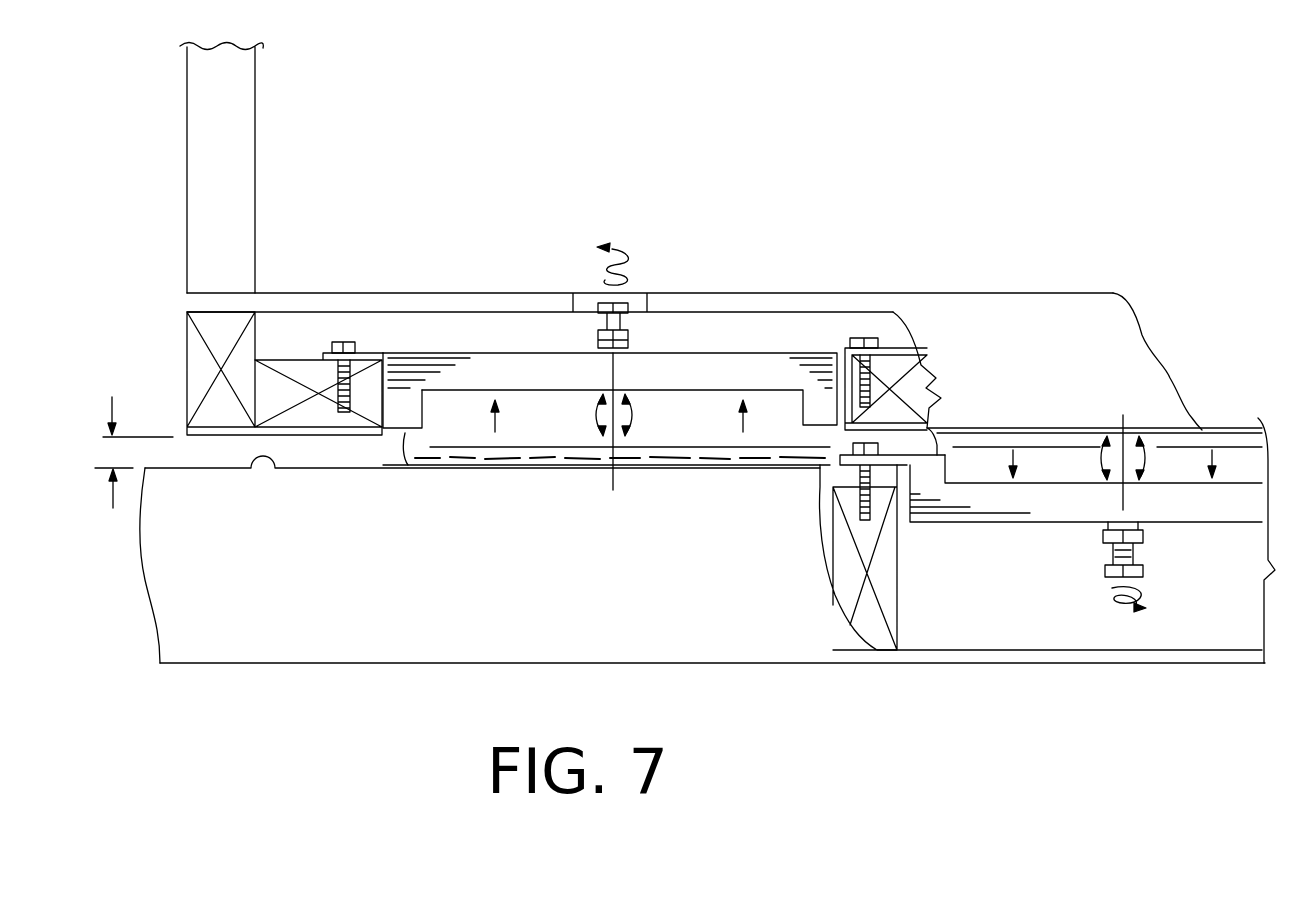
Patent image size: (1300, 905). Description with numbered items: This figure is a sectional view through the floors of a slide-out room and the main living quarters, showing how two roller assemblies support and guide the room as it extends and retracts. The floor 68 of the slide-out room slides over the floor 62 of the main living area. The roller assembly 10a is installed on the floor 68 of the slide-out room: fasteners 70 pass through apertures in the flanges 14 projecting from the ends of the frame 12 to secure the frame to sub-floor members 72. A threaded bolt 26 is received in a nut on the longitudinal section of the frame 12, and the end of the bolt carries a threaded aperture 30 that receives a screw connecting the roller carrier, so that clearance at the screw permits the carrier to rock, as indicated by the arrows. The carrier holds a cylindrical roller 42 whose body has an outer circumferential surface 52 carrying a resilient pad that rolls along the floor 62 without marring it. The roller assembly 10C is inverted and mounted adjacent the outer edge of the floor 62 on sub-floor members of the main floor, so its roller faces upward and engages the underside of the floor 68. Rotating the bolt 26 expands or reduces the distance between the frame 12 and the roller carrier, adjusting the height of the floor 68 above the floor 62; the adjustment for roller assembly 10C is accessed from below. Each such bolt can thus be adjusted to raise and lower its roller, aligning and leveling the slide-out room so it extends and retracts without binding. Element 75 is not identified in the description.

The roller assembly 10a is at (772, 409).
The roller assembly 10C is at (977, 520).
The frame 12 is at (522, 368).
The flanges 14 is at (370, 365).
The threaded bolt 26 is at (628, 305).
The threaded aperture 30 is at (1140, 580).
The cylindrical roller 42 is at (678, 422).
The outer circumferential surface 52 is at (710, 427).
The floor of the main living area 62 is at (272, 470).
The floor of the slide-out room 68 is at (347, 305).
The fasteners 70 is at (342, 340).
The sub-floor members 72 is at (295, 370).
The support frame 75 is at (882, 593).